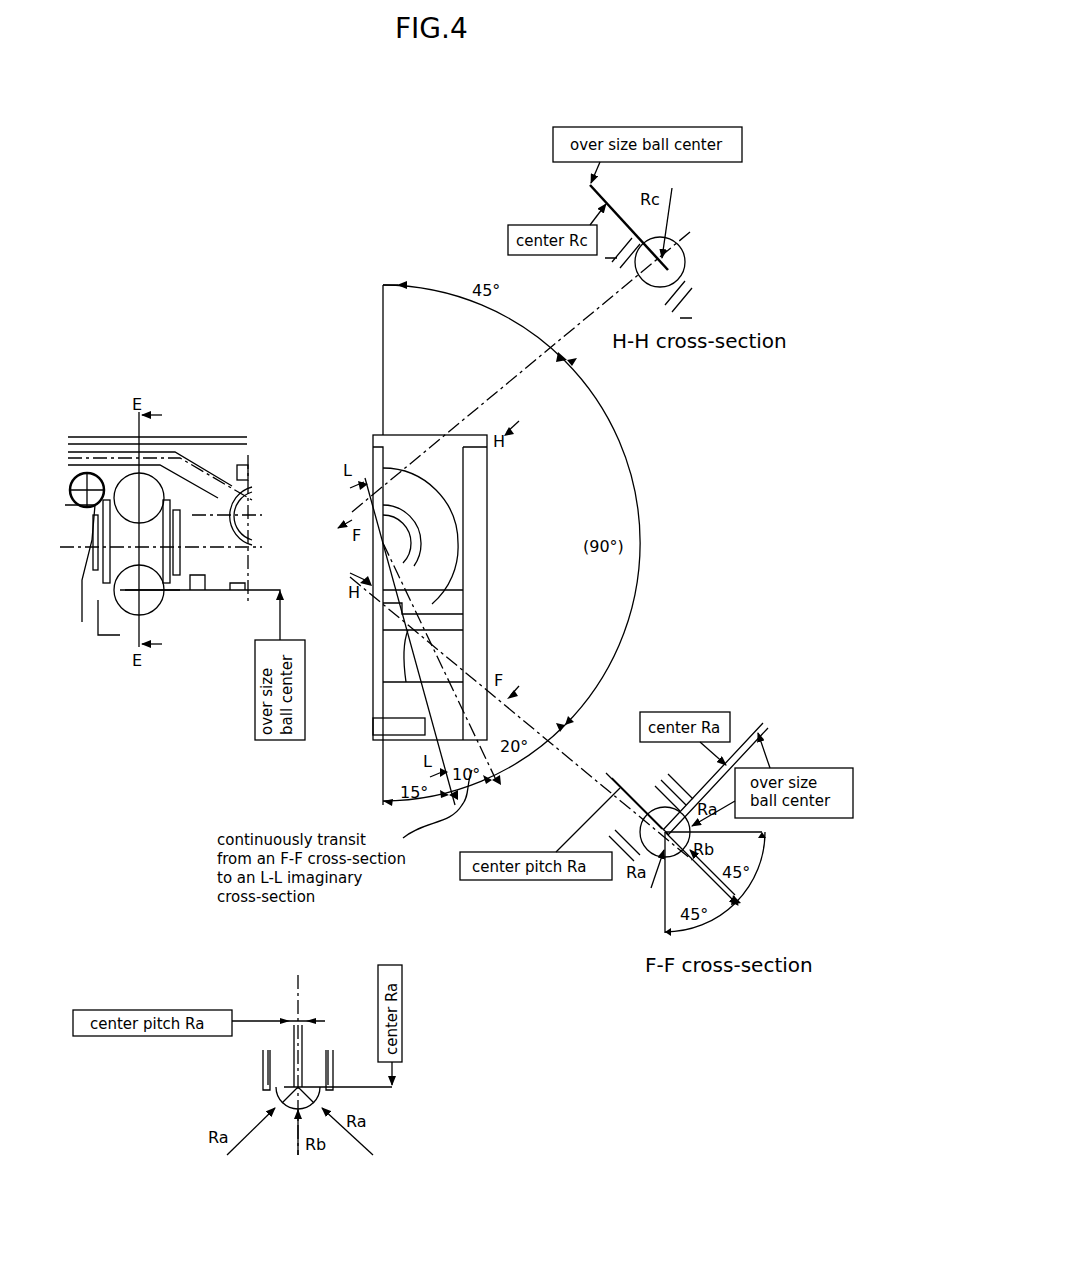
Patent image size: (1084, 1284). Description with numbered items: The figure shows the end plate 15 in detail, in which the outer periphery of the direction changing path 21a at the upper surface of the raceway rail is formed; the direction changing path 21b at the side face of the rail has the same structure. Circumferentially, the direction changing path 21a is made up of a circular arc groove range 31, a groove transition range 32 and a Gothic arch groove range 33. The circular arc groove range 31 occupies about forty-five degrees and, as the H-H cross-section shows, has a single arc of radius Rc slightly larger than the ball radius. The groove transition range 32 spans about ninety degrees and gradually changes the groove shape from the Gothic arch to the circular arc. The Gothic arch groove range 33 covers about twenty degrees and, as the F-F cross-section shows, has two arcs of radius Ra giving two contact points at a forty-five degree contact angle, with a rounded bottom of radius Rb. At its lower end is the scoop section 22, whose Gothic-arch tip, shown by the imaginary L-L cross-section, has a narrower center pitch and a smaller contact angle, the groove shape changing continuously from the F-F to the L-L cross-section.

The end plate 15 is at (432, 450).
The direction changing path 21a is at (445, 533).
The direction changing path 21b is at (445, 644).
The scoop section 22 is at (398, 603).
The circular arc groove range 31 is at (474, 323).
The groove transition range 32 is at (701, 543).
The Gothic arch groove range 33 is at (489, 775).